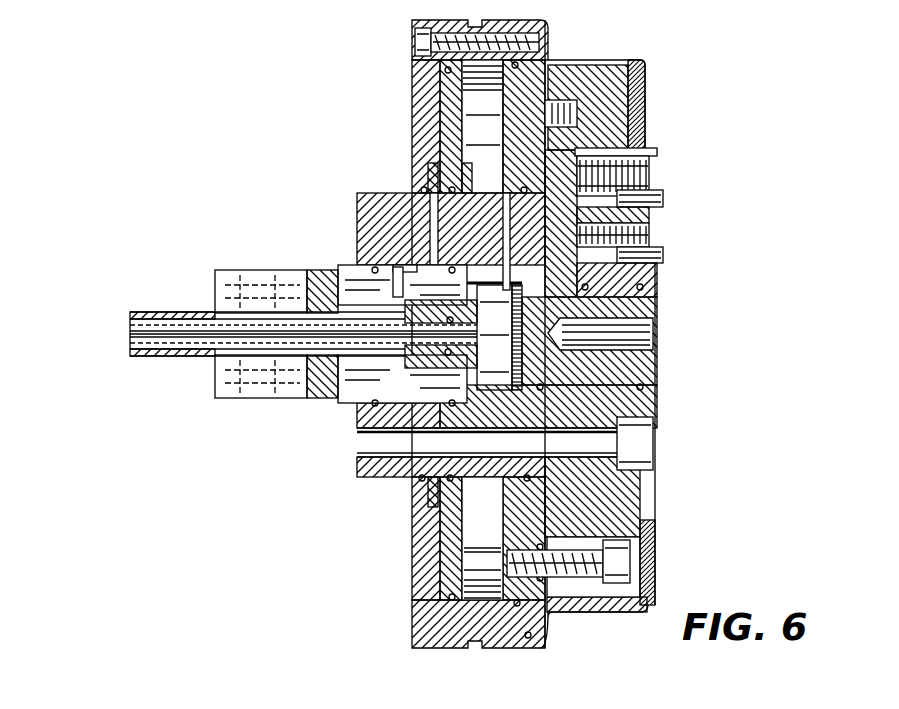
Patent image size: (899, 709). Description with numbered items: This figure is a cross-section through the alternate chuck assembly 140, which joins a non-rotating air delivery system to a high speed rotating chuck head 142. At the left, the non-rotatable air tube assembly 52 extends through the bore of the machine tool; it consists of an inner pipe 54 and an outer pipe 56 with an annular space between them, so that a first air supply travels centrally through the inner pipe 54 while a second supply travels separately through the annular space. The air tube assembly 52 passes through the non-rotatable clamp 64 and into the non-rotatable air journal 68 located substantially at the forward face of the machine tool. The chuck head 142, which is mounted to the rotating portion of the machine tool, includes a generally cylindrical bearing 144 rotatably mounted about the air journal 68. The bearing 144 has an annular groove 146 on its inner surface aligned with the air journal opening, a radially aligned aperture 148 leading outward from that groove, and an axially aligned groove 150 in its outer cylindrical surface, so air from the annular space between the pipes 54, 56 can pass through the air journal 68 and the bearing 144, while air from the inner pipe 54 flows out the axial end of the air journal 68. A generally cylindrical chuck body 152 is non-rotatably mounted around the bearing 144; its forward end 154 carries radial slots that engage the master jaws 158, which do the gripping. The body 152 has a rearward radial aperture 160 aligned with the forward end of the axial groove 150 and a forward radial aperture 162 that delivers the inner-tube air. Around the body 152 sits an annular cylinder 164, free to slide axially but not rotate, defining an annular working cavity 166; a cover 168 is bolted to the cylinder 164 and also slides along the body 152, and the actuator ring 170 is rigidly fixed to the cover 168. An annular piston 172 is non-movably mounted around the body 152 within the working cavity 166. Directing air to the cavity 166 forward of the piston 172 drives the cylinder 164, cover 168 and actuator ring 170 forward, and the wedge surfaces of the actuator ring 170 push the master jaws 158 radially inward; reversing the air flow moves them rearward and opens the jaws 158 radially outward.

The air tube assembly 52 is at (131, 312).
The inner pipe 54 is at (130, 328).
The outer pipe 56 is at (130, 345).
The clamp 64 is at (215, 282).
The air journal 68 is at (320, 268).
The chuck assembly 140 is at (668, 112).
The chuck head 142 is at (646, 63).
The bearing 144 is at (340, 400).
The annular groove 146 is at (393, 372).
The radially aligned aperture 148 is at (356, 268).
The axially aligned groove 150 is at (395, 285).
The chuck body 152 is at (357, 193).
The forward end 154 is at (660, 500).
The master jaws 158 is at (660, 200).
The aperture 160 is at (434, 215).
The aperture 162 is at (640, 285).
The cylinder 164 is at (440, 542).
The working cavity 166 is at (488, 548).
The cover 168 is at (470, 585).
The actuator ring 170 is at (650, 582).
The piston 172 is at (560, 105).